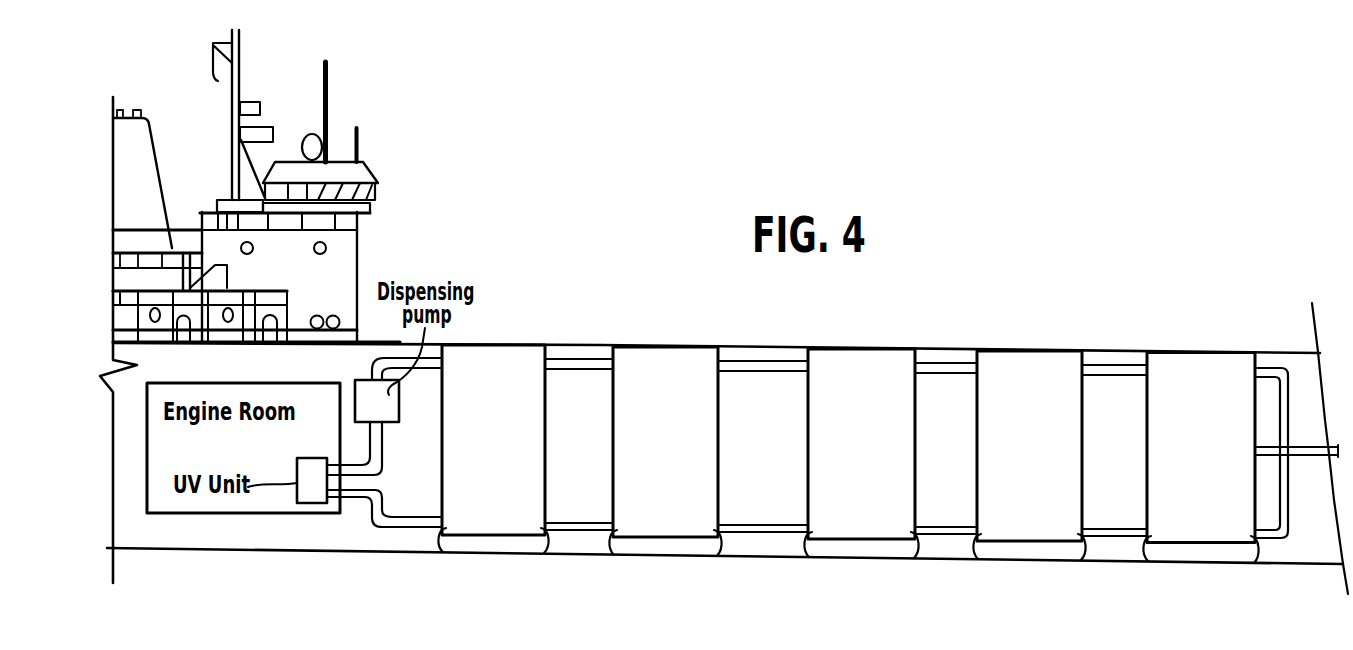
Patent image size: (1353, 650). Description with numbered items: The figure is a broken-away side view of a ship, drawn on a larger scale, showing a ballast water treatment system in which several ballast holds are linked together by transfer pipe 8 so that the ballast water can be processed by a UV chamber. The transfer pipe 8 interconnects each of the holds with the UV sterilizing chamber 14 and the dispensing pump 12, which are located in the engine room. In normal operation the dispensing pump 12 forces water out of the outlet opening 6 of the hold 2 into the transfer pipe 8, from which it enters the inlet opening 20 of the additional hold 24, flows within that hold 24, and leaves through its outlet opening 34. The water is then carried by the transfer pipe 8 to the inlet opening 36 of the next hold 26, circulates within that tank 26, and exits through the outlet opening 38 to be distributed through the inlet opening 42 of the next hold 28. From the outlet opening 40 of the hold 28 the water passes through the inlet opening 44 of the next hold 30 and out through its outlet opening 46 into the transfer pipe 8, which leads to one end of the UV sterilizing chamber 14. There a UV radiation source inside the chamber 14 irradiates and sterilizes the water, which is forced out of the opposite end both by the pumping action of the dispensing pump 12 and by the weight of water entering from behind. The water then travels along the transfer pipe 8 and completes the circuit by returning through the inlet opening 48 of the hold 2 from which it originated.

The hold 2 is at (493, 440).
The outlet opening 6 is at (545, 554).
The transfer pipe 8 is at (358, 498).
The dispensing pump 12 is at (357, 381).
The UV sterilizing chamber 14 is at (297, 500).
The inlet opening 20 is at (613, 556).
The additional hold 24 is at (665, 442).
The hold 26 is at (861, 444).
The hold 28 is at (1029, 446).
The hold 30 is at (1201, 448).
The outlet opening 34 is at (718, 557).
The inlet opening 36 is at (808, 558).
The outlet opening 38 is at (915, 559).
The outlet opening 40 is at (1082, 561).
The inlet opening 42 is at (977, 560).
The inlet opening 44 is at (1146, 562).
The outlet opening 46 is at (1256, 563).
The inlet opening 48 is at (441, 553).